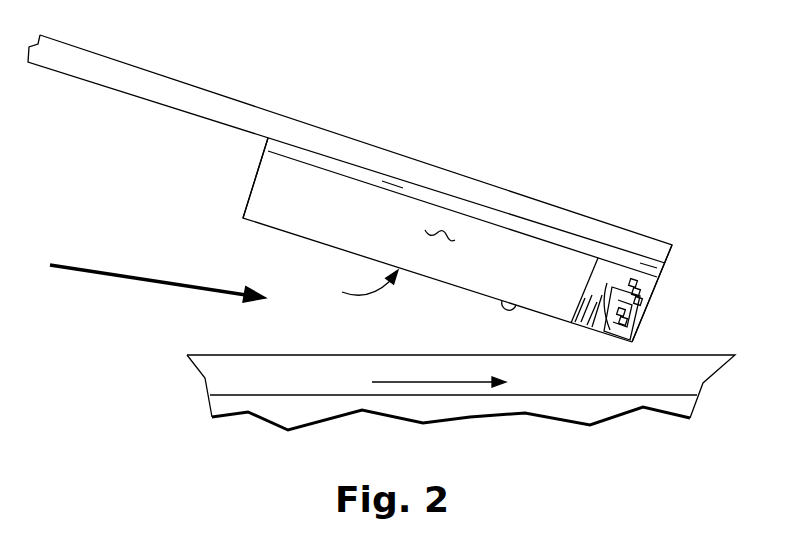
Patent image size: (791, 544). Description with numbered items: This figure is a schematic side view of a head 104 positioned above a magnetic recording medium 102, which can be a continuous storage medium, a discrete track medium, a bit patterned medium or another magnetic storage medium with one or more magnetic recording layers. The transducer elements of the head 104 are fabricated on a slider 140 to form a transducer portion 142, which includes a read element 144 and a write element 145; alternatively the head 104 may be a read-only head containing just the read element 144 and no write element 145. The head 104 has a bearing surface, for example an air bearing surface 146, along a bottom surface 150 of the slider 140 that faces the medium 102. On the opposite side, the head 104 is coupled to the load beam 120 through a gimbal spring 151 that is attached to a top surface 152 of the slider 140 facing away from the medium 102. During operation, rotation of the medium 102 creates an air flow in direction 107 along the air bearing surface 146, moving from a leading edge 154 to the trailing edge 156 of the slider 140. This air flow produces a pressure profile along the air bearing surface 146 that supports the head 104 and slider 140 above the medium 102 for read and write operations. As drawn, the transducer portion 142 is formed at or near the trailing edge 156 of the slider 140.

The medium 102 is at (670, 385).
The head 104 is at (667, 229).
The air flow direction 107 is at (438, 382).
The load beam 120 is at (284, 130).
The slider 140 is at (443, 232).
The transducer portion 142 is at (674, 280).
The read element 144 is at (601, 277).
The write element 145 is at (645, 268).
The air bearing surface 146 is at (350, 282).
The bottom surface 150 is at (517, 305).
The gimbal spring 151 is at (394, 181).
The top surface 152 is at (516, 228).
The leading edge 154 is at (252, 181).
The trailing edge 156 is at (650, 301).